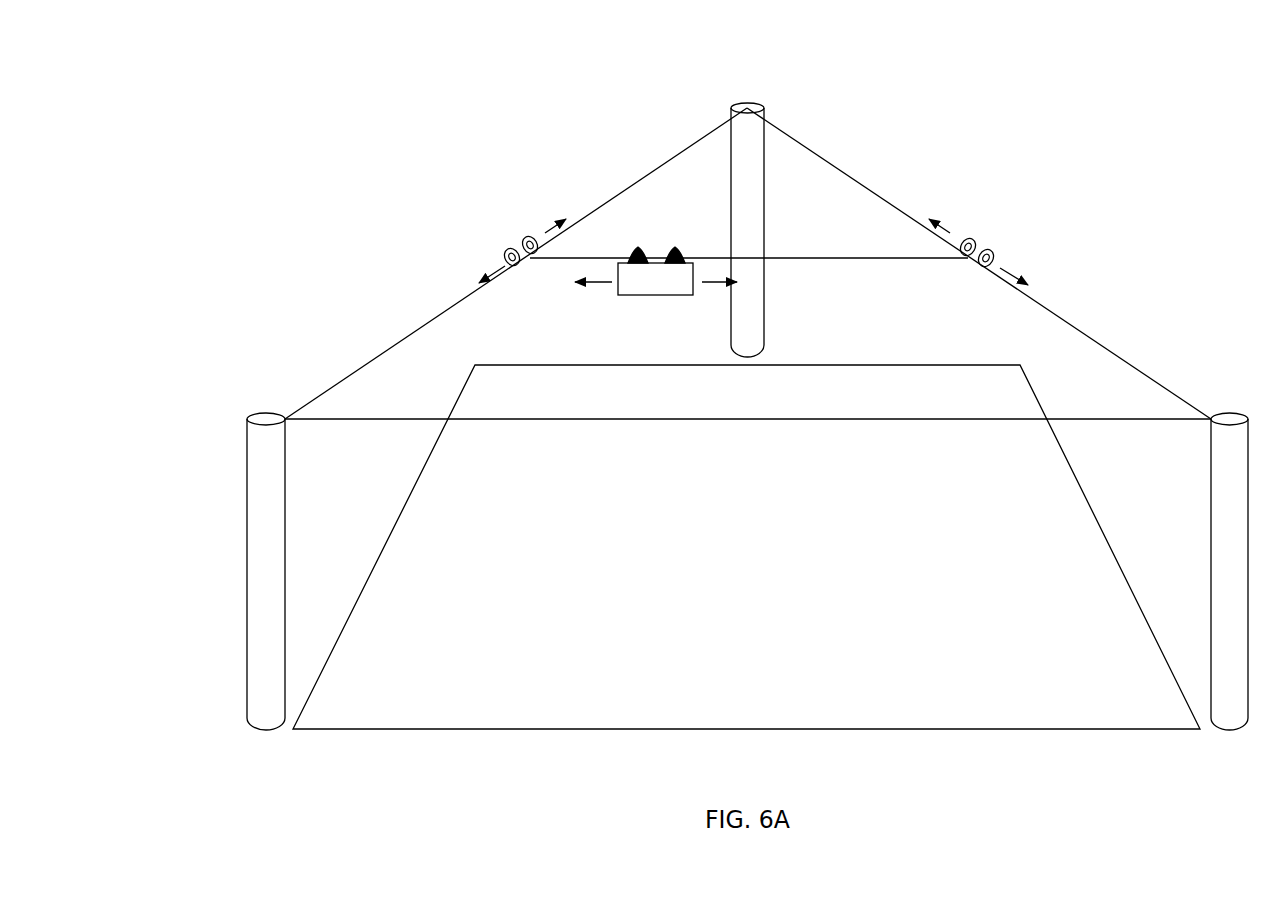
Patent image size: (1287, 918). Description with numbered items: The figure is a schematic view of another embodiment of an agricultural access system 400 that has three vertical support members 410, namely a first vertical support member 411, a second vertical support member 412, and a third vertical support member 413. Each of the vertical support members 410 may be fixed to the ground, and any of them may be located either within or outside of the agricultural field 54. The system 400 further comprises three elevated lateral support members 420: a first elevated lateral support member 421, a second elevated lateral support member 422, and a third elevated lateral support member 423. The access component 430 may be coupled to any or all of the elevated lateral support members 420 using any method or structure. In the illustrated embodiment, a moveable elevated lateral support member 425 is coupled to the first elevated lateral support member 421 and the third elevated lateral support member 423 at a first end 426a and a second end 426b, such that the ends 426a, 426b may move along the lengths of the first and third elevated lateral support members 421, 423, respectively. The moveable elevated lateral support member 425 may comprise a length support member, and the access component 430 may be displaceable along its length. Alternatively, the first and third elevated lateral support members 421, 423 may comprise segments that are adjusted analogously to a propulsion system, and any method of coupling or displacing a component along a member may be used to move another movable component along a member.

The agricultural access system 400 is at (340, 157).
The vertical support members 410 is at (747, 398).
The first vertical support member 411 is at (748, 177).
The second vertical support member 412 is at (1230, 558).
The third vertical support member 413 is at (270, 595).
The elevated lateral support members 420 is at (730, 282).
The first elevated lateral support member 421 is at (1105, 347).
The second elevated lateral support member 422 is at (845, 420).
The third elevated lateral support member 423 is at (390, 348).
The moveable elevated lateral support member 425 is at (588, 258).
The first end 426a is at (528, 237).
The second end 426b is at (990, 246).
The access component 430 is at (657, 296).
The agricultural field 54 is at (1073, 717).